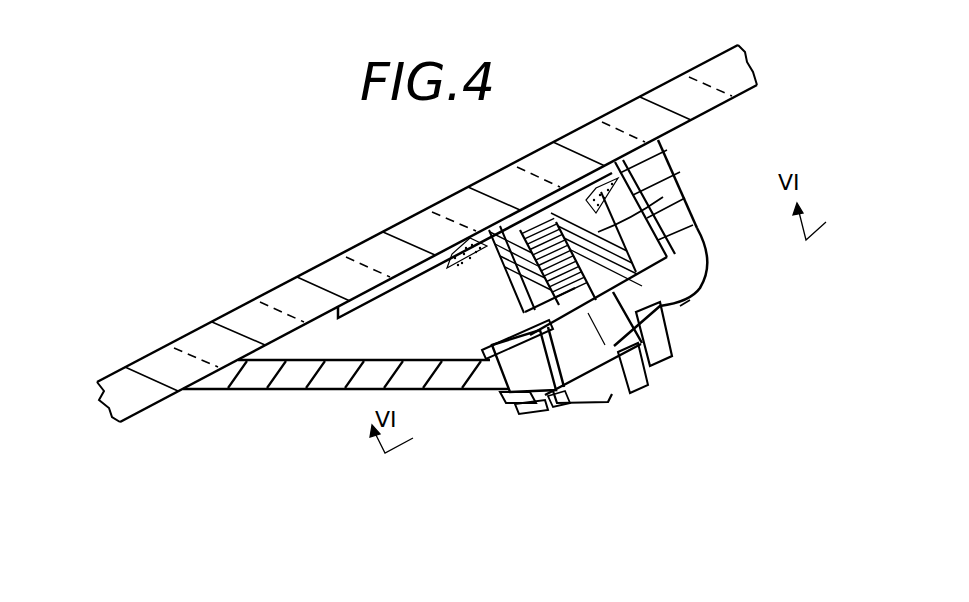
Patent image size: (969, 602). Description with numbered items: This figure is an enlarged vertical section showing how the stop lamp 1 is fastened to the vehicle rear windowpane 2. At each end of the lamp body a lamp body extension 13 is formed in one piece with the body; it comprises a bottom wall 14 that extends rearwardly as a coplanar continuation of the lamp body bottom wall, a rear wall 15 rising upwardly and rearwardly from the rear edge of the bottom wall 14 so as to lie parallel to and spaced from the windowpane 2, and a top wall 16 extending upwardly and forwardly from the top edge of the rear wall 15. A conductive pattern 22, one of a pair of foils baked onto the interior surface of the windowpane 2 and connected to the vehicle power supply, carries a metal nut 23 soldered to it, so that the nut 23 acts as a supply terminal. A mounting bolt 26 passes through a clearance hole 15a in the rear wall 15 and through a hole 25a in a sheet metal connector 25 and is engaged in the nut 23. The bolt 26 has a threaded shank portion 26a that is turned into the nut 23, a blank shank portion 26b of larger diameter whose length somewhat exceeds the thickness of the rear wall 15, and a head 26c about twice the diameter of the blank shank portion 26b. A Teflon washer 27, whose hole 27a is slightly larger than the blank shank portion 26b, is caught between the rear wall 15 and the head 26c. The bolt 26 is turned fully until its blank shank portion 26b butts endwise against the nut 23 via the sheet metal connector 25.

The stop lamp 1 is at (688, 408).
The vehicle rear windowpane 2 is at (645, 95).
The lamp body extension 13 is at (670, 310).
The bottom wall 14 is at (327, 392).
The rear wall 15 is at (690, 298).
The clearance hole 15a is at (655, 360).
The top wall 16 is at (697, 220).
The conductive pattern 22 is at (363, 295).
The nut 23 is at (657, 182).
The sheet metal connector 25 is at (520, 331).
The hole 25a is at (550, 320).
The mounting bolt 26 is at (590, 410).
The threaded shank portion 26a is at (478, 233).
The blank shank portion 26b is at (513, 390).
The head 26c is at (636, 394).
The washer 27 is at (516, 416).
The hole 27a is at (557, 404).